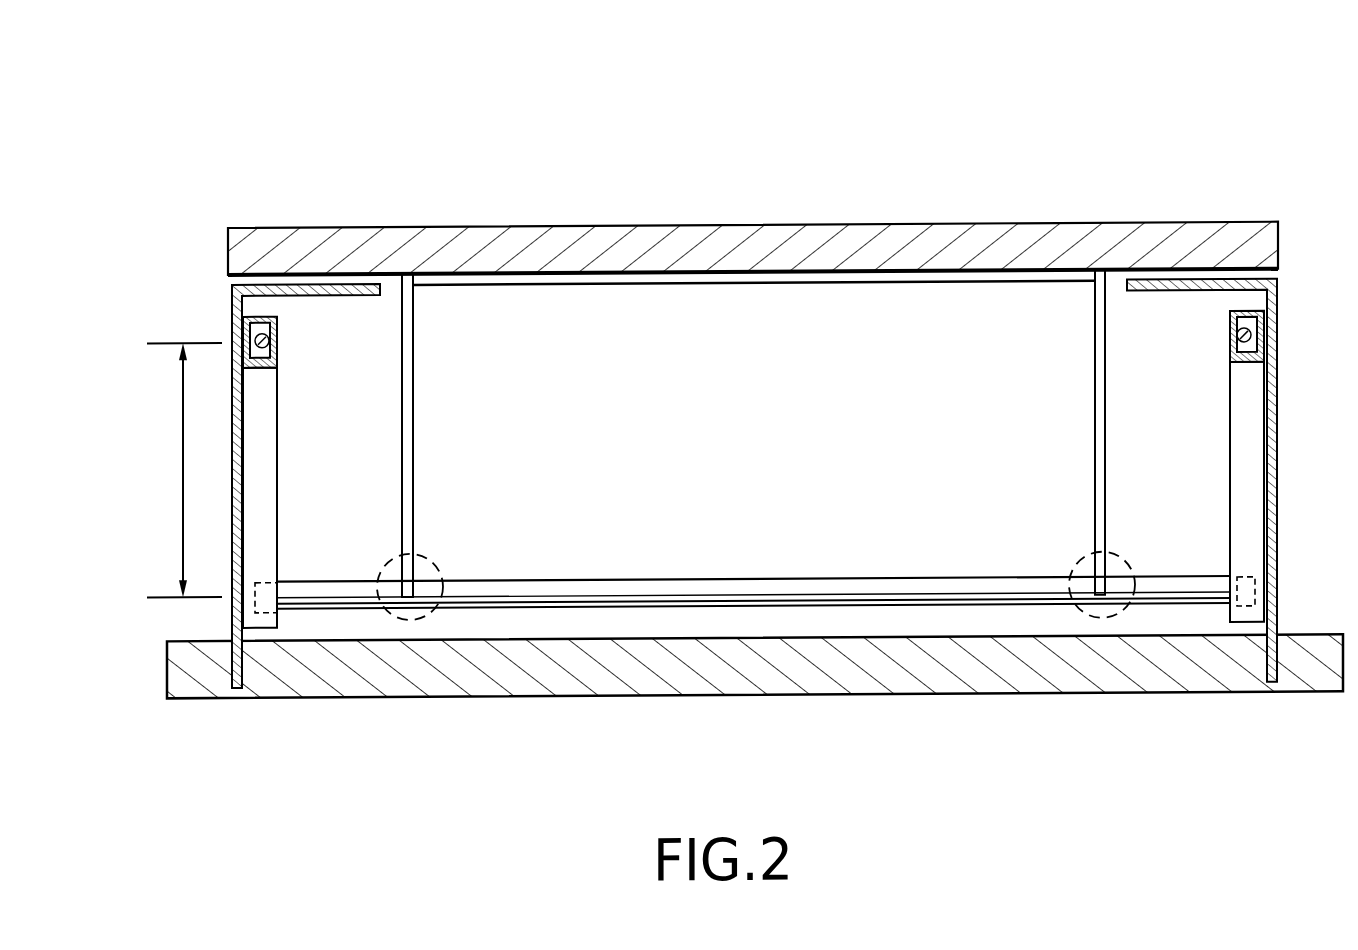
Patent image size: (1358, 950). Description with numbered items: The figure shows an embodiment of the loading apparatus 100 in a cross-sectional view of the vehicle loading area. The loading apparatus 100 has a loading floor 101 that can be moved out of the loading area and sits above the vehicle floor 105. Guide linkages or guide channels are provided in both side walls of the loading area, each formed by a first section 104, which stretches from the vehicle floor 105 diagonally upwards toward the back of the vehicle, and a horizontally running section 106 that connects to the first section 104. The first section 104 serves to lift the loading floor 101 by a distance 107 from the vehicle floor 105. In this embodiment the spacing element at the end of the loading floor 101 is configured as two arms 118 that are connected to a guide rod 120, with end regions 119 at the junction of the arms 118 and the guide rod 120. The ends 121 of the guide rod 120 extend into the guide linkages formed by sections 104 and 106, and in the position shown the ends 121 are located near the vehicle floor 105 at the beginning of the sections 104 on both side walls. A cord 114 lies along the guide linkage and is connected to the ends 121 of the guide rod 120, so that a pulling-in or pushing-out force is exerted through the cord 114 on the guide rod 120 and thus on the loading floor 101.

The loading apparatus 100 is at (108, 146).
The loading floor 101 is at (1028, 228).
The first section of guide linkage 104 is at (277, 491).
The vehicle floor 105 is at (977, 693).
The horizontally running section of guide linkage 106 is at (262, 320).
The distance 107 is at (180, 457).
The cord 114 is at (271, 343).
The arm 118 is at (414, 397).
The end region 119 is at (437, 568).
The guide rod 120 is at (655, 581).
The end 121 is at (260, 583).